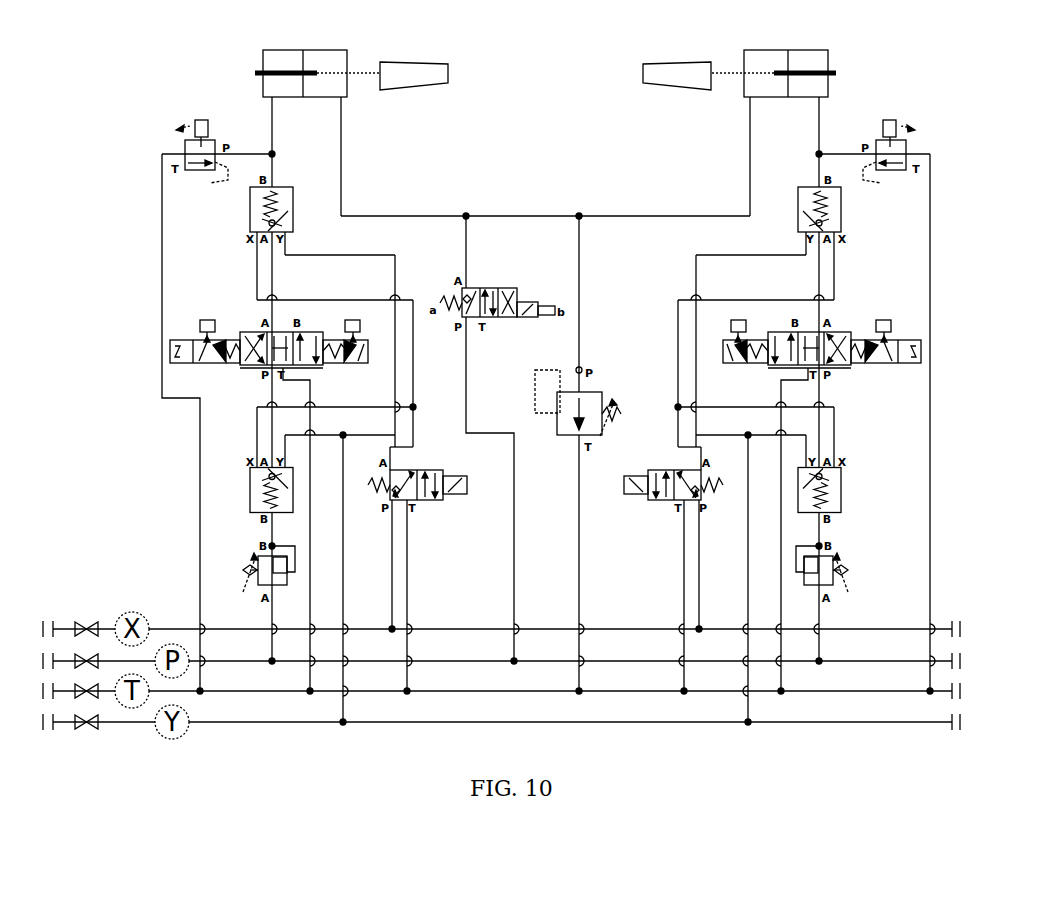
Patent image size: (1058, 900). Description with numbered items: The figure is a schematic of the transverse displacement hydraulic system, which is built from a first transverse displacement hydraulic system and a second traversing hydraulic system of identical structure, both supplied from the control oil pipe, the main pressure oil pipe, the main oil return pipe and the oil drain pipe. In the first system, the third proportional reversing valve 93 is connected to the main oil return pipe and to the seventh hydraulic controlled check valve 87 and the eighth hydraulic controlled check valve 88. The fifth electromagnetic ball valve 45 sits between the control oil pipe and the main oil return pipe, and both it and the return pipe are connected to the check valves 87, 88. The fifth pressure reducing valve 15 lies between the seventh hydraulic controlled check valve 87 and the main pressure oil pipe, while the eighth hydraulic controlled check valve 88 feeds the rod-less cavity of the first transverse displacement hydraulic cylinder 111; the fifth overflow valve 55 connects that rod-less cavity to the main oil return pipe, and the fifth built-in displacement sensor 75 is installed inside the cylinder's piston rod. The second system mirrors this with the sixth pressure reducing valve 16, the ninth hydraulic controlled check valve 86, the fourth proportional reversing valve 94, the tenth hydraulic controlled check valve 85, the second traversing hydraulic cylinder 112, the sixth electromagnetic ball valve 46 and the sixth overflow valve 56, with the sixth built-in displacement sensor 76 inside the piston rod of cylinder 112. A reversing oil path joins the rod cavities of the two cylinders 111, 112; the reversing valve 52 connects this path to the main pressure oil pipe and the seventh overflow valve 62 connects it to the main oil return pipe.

The first transverse displacement hydraulic cylinder 111 is at (355, 63).
The second traversing hydraulic cylinder 112 is at (735, 63).
The fifth built-in displacement sensor 75 is at (267, 73).
The sixth built-in displacement sensor 76 is at (823, 73).
The fifth overflow valve 55 is at (197, 157).
The sixth overflow valve 56 is at (893, 157).
The eighth hydraulic controlled check valve 88 is at (251, 209).
The ninth hydraulic controlled check valve 86 is at (838, 209).
The third proportional reversing valve 93 is at (269, 355).
The fourth proportional reversing valve 94 is at (822, 355).
The seventh hydraulic controlled check valve 87 is at (253, 490).
The tenth hydraulic controlled check valve 85 is at (838, 490).
The fifth pressure reducing valve 15 is at (275, 576).
The sixth pressure reducing valve 16 is at (816, 576).
The fifth electromagnetic ball valve 45 is at (417, 499).
The sixth electromagnetic ball valve 46 is at (672, 498).
The reversing valve 52 is at (497, 319).
The seventh overflow valve 62 is at (578, 411).